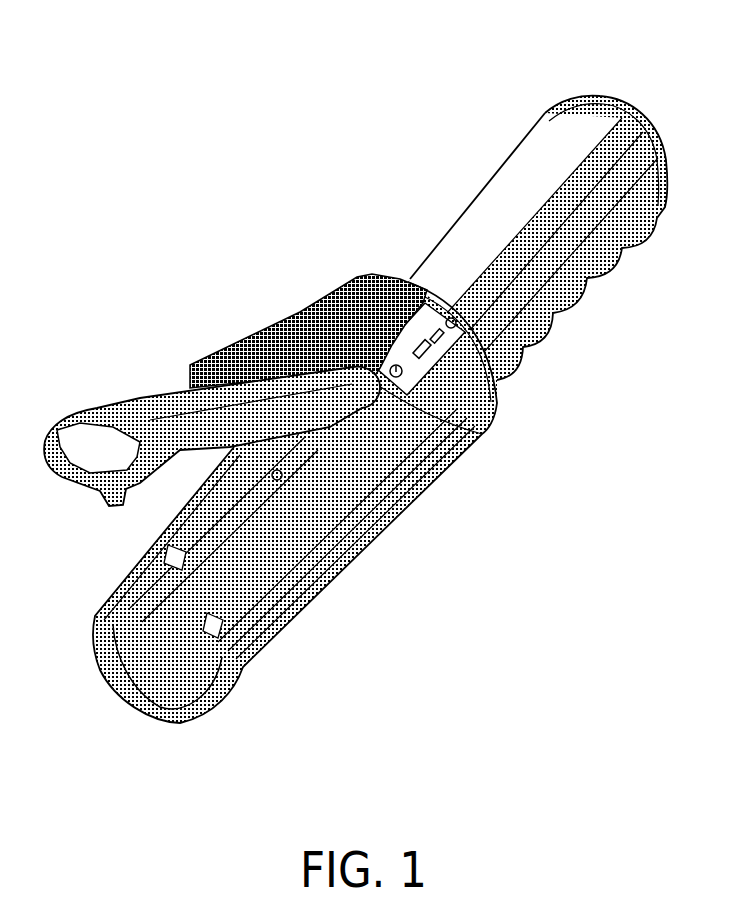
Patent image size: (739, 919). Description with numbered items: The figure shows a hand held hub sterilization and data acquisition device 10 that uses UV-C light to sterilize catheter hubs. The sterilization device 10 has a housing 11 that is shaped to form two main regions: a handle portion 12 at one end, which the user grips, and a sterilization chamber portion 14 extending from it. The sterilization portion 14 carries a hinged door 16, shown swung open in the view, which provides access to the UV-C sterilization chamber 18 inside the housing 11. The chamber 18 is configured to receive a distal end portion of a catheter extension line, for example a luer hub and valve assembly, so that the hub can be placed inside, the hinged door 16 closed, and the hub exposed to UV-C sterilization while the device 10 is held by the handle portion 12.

The hand held hub sterilization and data acquisition device 10 is at (355, 394).
The housing 11 is at (490, 438).
The handle portion 12 is at (557, 143).
The sterilization chamber portion 14 is at (347, 550).
The hinged door 16 is at (140, 398).
The UV-C sterilization chamber 18 is at (233, 560).